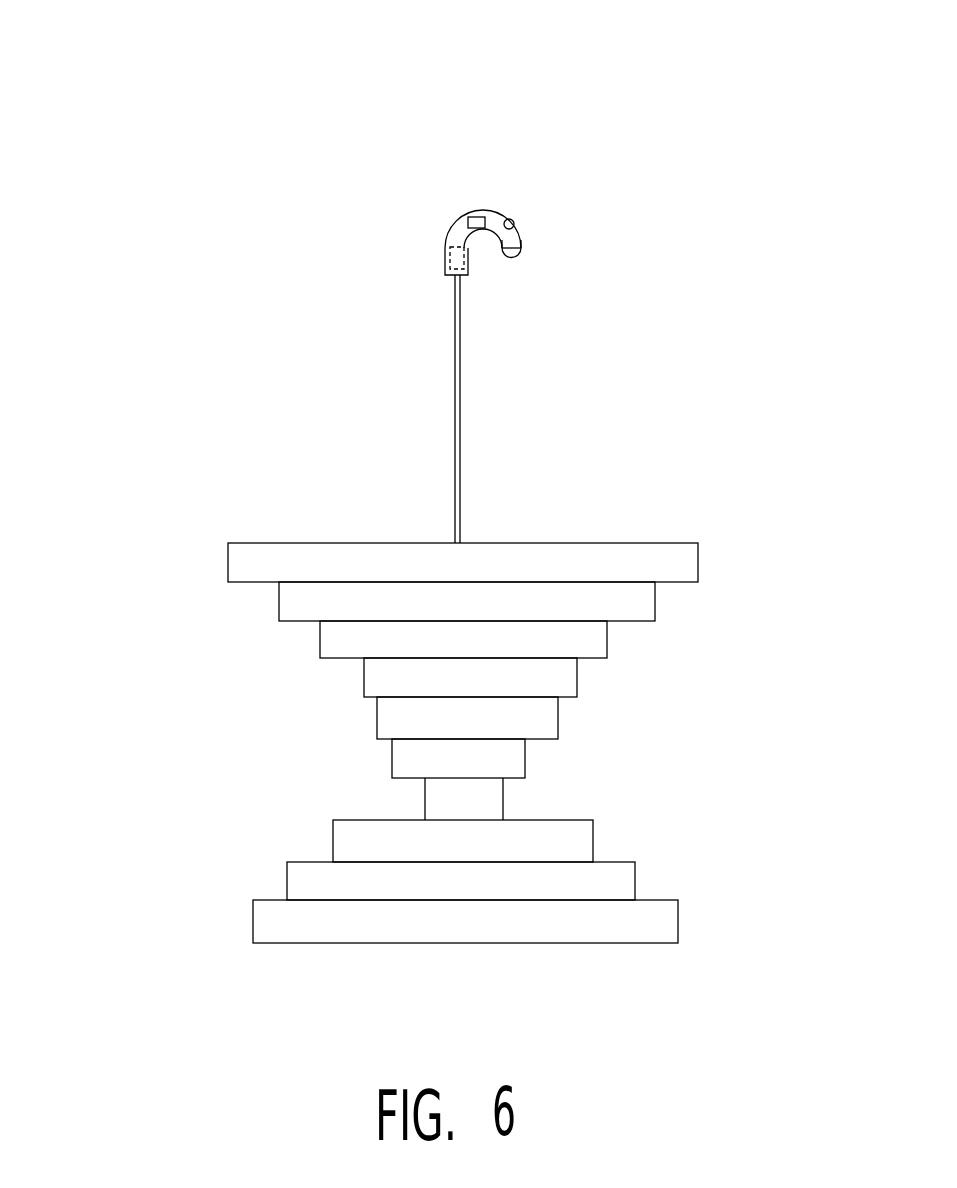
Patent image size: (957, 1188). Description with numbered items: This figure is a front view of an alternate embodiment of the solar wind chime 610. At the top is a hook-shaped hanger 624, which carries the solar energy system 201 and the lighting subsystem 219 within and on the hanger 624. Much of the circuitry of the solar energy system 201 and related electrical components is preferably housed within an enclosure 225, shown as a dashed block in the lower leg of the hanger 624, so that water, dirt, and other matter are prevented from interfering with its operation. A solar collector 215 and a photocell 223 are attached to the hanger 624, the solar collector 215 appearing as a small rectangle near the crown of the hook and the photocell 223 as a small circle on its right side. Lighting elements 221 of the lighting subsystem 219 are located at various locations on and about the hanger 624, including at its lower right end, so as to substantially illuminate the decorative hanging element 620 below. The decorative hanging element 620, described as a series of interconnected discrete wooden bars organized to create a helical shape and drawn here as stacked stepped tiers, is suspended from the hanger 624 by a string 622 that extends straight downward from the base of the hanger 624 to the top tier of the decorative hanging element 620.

The solar wind chime 610 is at (183, 238).
The hanger 624 is at (470, 206).
The solar energy system 201 is at (445, 265).
The enclosure 225 is at (453, 250).
The solar collector 215 is at (482, 217).
The photocell 223 is at (514, 223).
The lighting subsystem 219 is at (528, 245).
The lighting element 221 is at (523, 256).
The string 622 is at (461, 430).
The decorative hanging element 620 is at (584, 814).